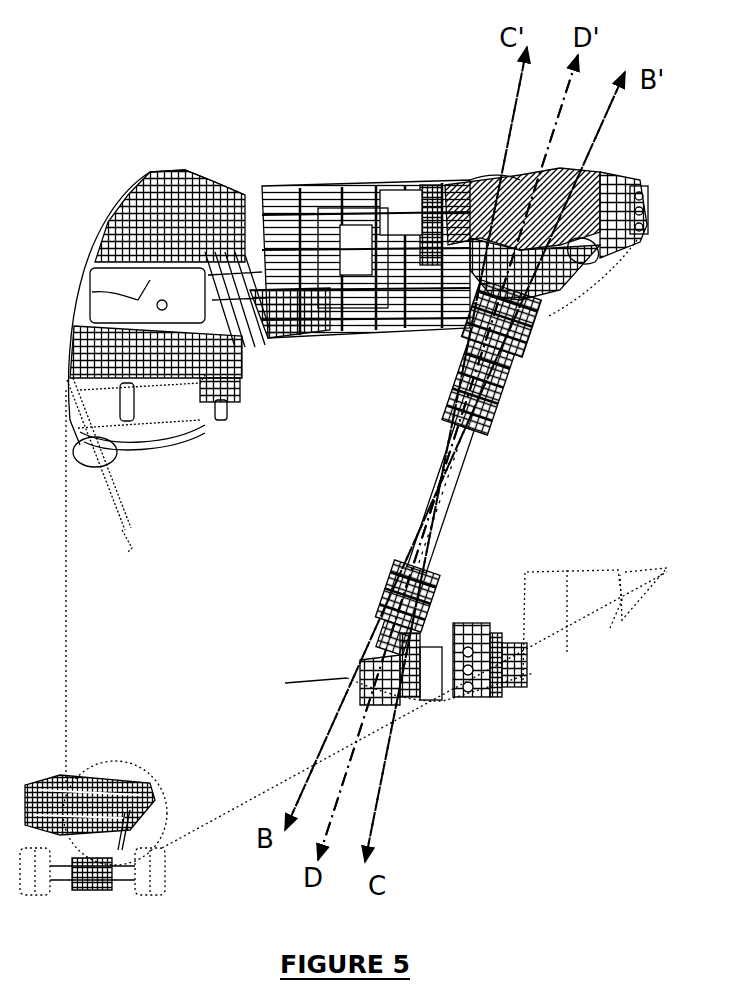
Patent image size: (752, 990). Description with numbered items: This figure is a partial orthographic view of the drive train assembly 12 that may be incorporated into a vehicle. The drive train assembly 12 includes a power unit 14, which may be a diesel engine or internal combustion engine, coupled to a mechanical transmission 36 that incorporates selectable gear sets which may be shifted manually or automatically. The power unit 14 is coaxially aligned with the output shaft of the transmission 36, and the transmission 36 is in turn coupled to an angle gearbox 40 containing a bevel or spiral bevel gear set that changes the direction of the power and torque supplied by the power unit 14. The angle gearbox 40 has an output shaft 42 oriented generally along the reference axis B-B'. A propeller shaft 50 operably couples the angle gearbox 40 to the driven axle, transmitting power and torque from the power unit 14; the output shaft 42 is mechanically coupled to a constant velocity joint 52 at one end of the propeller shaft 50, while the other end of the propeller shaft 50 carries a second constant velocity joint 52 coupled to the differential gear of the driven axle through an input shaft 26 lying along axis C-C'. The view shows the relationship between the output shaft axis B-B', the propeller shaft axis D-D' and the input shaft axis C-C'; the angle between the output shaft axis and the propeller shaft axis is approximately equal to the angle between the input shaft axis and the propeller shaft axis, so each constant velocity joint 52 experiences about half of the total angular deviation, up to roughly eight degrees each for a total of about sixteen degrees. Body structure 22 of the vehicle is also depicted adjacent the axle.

The drive train assembly 12 is at (325, 170).
The power unit 14 is at (197, 150).
The mechanical transmission 36 is at (355, 250).
The angle gearbox 40 is at (472, 217).
The output shaft 42 is at (533, 307).
The propeller shaft 50 is at (452, 487).
The constant velocity joint 52 is at (485, 392).
The vehicle body 22 is at (640, 583).
The input shaft 26 is at (430, 645).